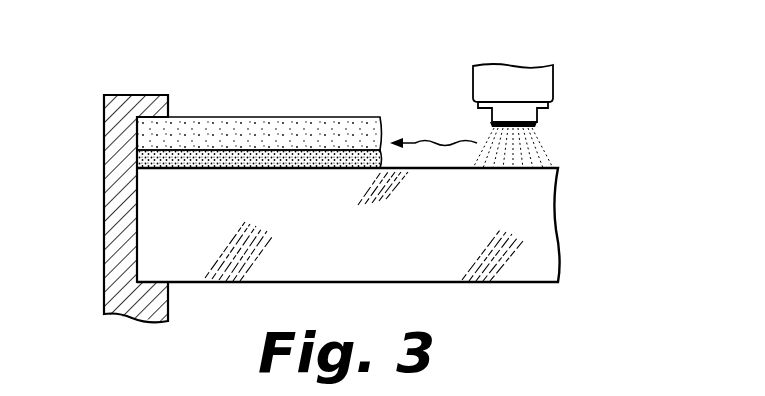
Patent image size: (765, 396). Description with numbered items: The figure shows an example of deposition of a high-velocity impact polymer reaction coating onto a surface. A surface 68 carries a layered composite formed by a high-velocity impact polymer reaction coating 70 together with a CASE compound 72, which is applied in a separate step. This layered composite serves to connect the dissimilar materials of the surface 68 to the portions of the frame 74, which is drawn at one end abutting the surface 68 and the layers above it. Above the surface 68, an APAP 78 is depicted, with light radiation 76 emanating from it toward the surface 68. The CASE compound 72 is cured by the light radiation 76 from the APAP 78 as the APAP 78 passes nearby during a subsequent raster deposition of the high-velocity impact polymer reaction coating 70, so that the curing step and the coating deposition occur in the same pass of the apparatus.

The surface 68 is at (520, 227).
The high-velocity impact polymer reaction coating 70 is at (208, 160).
The CASE compound 72 is at (209, 143).
The frame 74 is at (128, 100).
The light radiation 76 is at (413, 112).
The APAP 78 is at (513, 92).